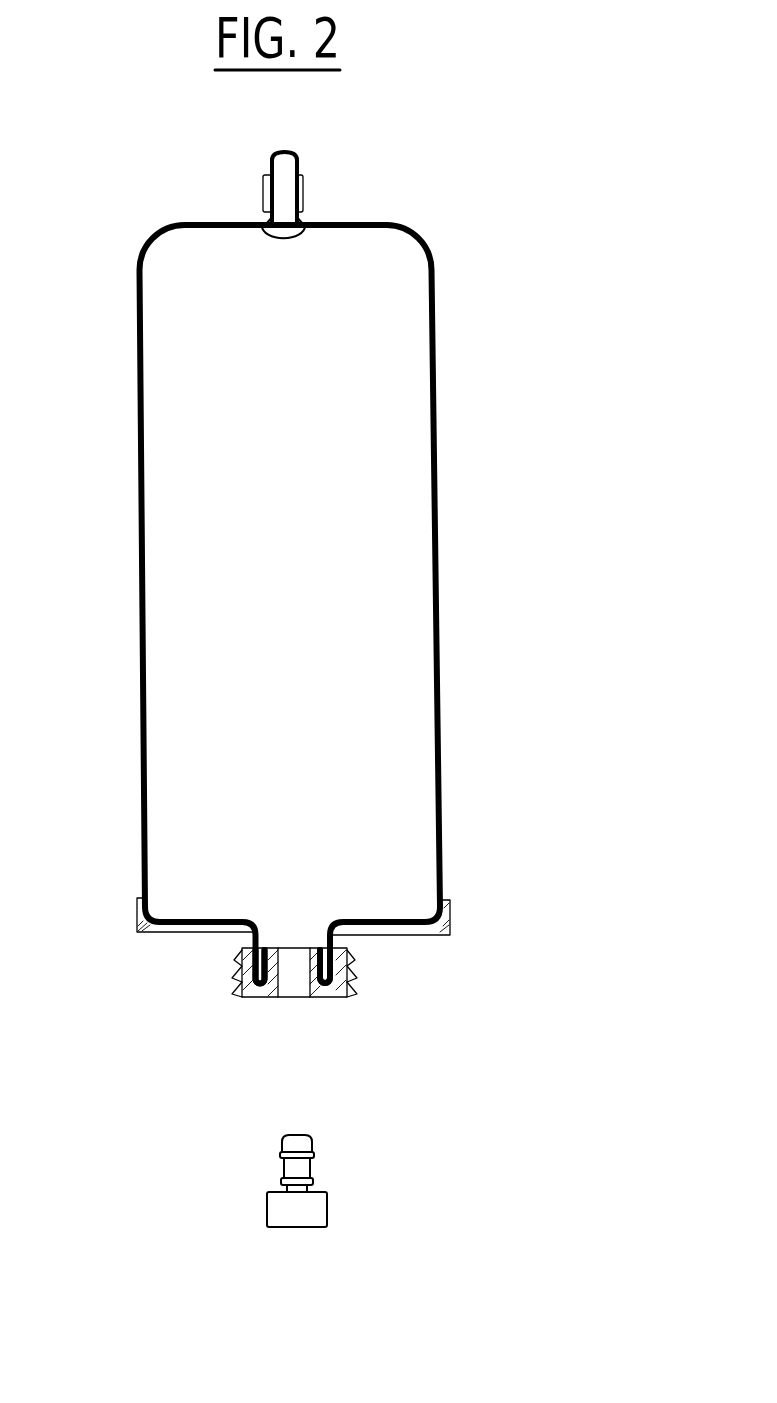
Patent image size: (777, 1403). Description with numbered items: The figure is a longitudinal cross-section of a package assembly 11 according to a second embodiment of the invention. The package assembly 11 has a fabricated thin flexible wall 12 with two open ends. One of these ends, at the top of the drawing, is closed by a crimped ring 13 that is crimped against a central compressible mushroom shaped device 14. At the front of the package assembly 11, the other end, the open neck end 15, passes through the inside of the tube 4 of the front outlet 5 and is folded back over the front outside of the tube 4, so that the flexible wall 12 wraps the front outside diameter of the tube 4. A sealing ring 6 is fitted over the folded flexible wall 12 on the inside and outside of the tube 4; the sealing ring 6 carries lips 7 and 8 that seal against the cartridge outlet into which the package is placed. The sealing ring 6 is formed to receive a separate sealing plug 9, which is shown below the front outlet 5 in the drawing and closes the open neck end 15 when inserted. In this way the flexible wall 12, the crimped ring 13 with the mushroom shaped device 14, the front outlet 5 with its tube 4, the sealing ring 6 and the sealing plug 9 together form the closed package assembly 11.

The tube 4 is at (257, 918).
The front outlet 5 is at (450, 928).
The sealing ring 6 is at (257, 998).
The lip 7 is at (233, 972).
The lip 8 is at (233, 988).
The sealing plug 9 is at (280, 1207).
The package assembly 11 is at (364, 604).
The fabricated thin flexible wall 12 is at (443, 682).
The crimped ring 13 is at (267, 182).
The central compressible mushroom shaped device 14 is at (275, 238).
The open neck end 15 is at (292, 938).